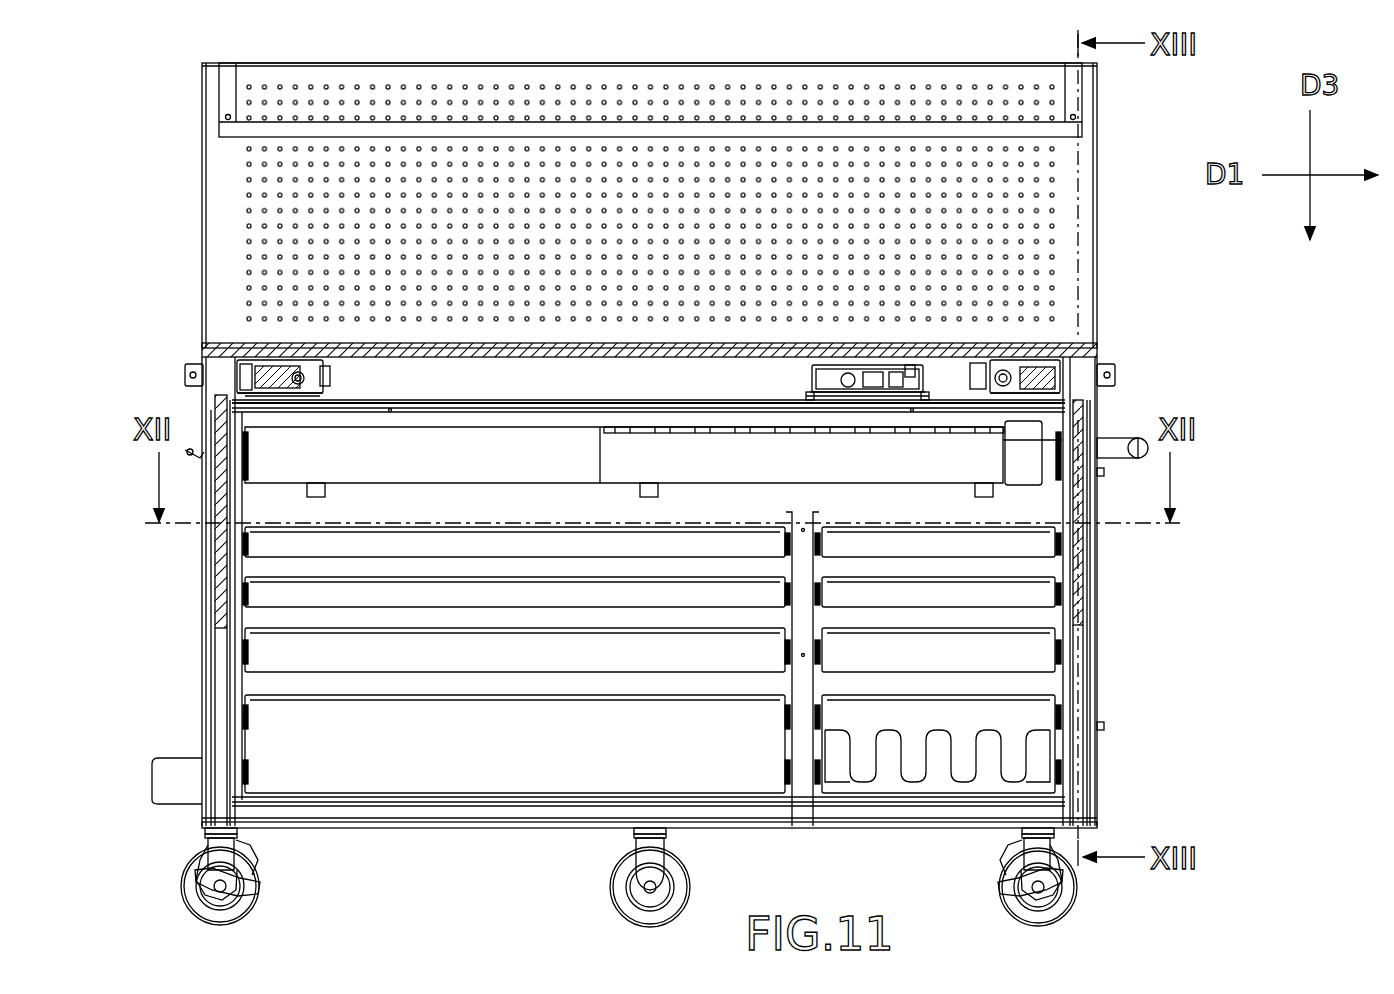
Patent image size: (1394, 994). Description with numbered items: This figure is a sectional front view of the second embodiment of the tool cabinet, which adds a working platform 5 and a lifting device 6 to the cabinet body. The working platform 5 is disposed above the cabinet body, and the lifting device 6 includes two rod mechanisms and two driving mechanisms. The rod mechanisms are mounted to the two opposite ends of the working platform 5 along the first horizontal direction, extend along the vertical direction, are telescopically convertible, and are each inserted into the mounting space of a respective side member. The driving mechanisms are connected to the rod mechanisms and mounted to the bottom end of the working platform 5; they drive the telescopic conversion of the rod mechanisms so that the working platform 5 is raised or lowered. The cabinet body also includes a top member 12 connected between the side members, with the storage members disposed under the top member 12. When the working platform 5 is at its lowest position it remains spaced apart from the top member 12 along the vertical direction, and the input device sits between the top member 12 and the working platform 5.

The working platform 5 is at (950, 341).
The lifting device 6 is at (217, 538).
The top member 12 is at (388, 402).